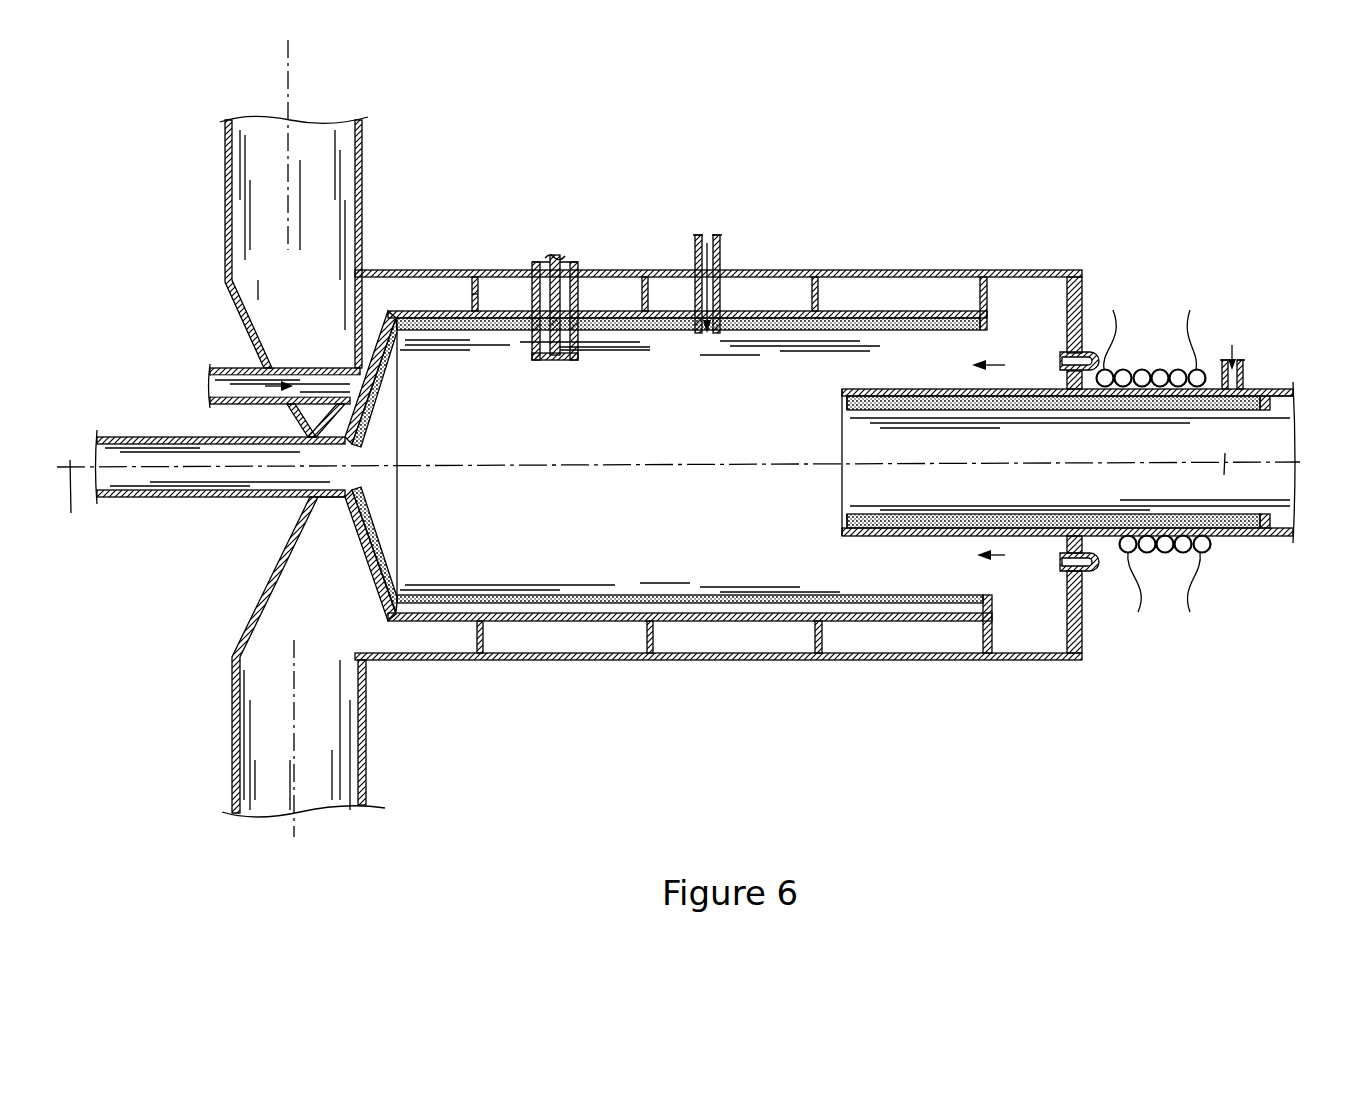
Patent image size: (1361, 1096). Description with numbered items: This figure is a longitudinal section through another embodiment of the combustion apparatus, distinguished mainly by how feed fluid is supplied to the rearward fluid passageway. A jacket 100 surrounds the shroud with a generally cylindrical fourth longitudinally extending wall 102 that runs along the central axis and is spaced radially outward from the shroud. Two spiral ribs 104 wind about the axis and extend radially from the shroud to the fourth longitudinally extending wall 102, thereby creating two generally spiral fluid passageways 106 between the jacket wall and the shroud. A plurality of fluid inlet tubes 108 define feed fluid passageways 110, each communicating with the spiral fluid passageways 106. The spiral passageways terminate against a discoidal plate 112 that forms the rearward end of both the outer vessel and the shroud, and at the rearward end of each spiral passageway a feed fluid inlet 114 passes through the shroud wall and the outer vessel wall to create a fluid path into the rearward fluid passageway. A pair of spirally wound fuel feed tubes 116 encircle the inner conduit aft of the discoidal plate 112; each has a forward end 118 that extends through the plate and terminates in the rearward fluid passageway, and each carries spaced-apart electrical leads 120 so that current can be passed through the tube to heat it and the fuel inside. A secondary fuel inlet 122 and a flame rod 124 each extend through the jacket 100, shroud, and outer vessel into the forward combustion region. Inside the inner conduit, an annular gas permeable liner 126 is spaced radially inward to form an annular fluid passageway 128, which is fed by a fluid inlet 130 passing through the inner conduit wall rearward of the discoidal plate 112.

The jacket 100 is at (762, 270).
The fourth longitudinally extending wall 102 is at (642, 660).
The spiral ribs 104 is at (790, 305).
The spiral fluid passageways 106 is at (577, 640).
The fluid inlet tubes 108 is at (230, 163).
The feed fluid passageways 110 is at (305, 180).
The discoidal plate 112 is at (1080, 272).
The feed fluid inlet 114 is at (1000, 365).
The fuel feed tubes 116 is at (1142, 365).
The forward end 118 is at (1062, 352).
The electrical leads 120 is at (1118, 347).
The secondary fuel inlet 122 is at (705, 235).
The flame rod 124 is at (527, 270).
The gas permeable liner 126 is at (1268, 405).
The fluid passageway 128 is at (1250, 390).
The fluid inlet 130 is at (1232, 345).